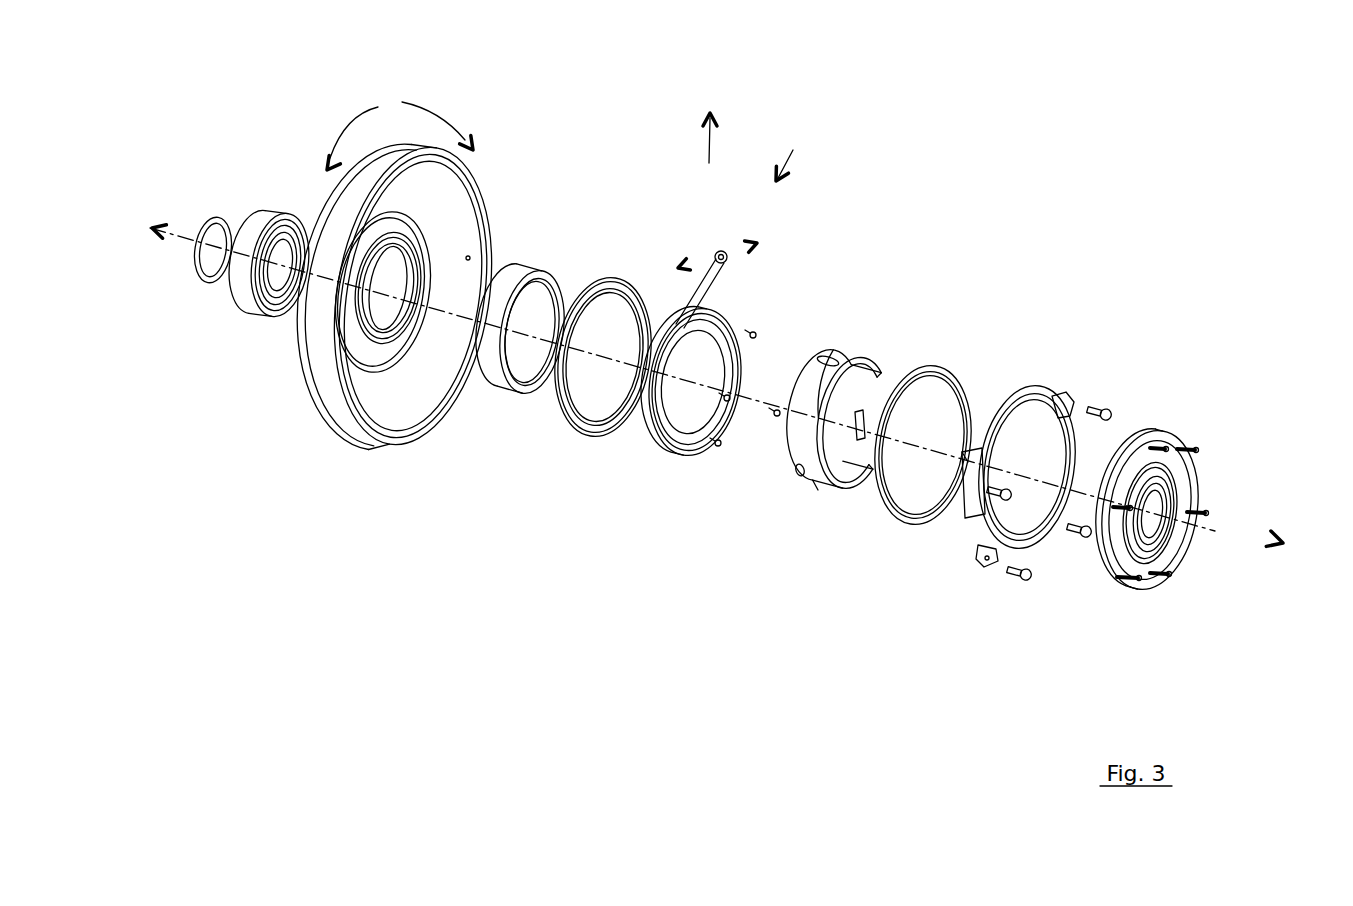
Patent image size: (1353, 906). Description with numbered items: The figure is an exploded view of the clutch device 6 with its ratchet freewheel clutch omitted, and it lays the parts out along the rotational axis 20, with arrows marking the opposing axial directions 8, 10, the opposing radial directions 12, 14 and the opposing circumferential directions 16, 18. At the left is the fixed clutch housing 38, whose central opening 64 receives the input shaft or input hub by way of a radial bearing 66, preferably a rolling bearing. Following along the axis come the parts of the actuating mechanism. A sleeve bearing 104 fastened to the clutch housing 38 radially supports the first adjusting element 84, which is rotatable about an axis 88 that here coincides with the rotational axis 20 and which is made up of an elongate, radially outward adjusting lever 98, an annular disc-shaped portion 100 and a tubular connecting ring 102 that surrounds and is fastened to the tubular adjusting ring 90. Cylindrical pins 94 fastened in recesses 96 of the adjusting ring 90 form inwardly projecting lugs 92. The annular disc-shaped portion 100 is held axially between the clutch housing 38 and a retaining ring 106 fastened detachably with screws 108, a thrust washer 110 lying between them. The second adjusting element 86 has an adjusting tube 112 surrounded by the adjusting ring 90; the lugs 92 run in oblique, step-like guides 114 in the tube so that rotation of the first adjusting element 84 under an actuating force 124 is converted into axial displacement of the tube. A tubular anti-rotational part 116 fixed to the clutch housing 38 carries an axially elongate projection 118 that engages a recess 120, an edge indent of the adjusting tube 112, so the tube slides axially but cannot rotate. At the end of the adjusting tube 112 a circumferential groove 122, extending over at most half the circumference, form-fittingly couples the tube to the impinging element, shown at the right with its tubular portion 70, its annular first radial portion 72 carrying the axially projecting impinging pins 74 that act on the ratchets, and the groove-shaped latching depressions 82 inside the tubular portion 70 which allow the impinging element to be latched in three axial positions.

The clutch device 6 is at (912, 188).
The axial direction 8 is at (1248, 536).
The axial direction 10 is at (190, 240).
The radial direction 12 is at (708, 150).
The radial direction 14 is at (793, 150).
The circumferential direction 16 is at (350, 130).
The circumferential direction 18 is at (417, 103).
The rotational axis 20 is at (695, 353).
The clutch housing 38 is at (419, 324).
The opening 64 is at (372, 318).
The radial bearing 66 is at (248, 302).
The tubular portion 70 is at (1160, 530).
The first radial portion 72 is at (1170, 524).
The impinging pin 74 is at (1163, 443).
The latching depression 82 is at (1160, 523).
The first adjusting element 84 is at (729, 247).
The second adjusting element 86 is at (872, 433).
The axis 88 is at (695, 353).
The adjusting ring 90 is at (677, 372).
The lugs 92 is at (642, 507).
The cylindrical pins 94 is at (733, 429).
The recesses 96 is at (677, 320).
The adjusting lever 98 is at (730, 247).
The annular disc-shaped portion 100 is at (723, 358).
The connecting ring 102 is at (660, 338).
The sleeve bearing 104 is at (607, 326).
The retaining ring 106 is at (1043, 390).
The screw 108 is at (1000, 493).
The thrust washer 110 is at (967, 387).
The adjusting tube 112 is at (893, 360).
The guides 114 is at (813, 377).
The anti-rotational part 116 is at (520, 335).
The projection 118 is at (480, 375).
The recess 120 is at (795, 420).
The circumferential groove 122 is at (956, 426).
The actuating force 124 is at (703, 252).